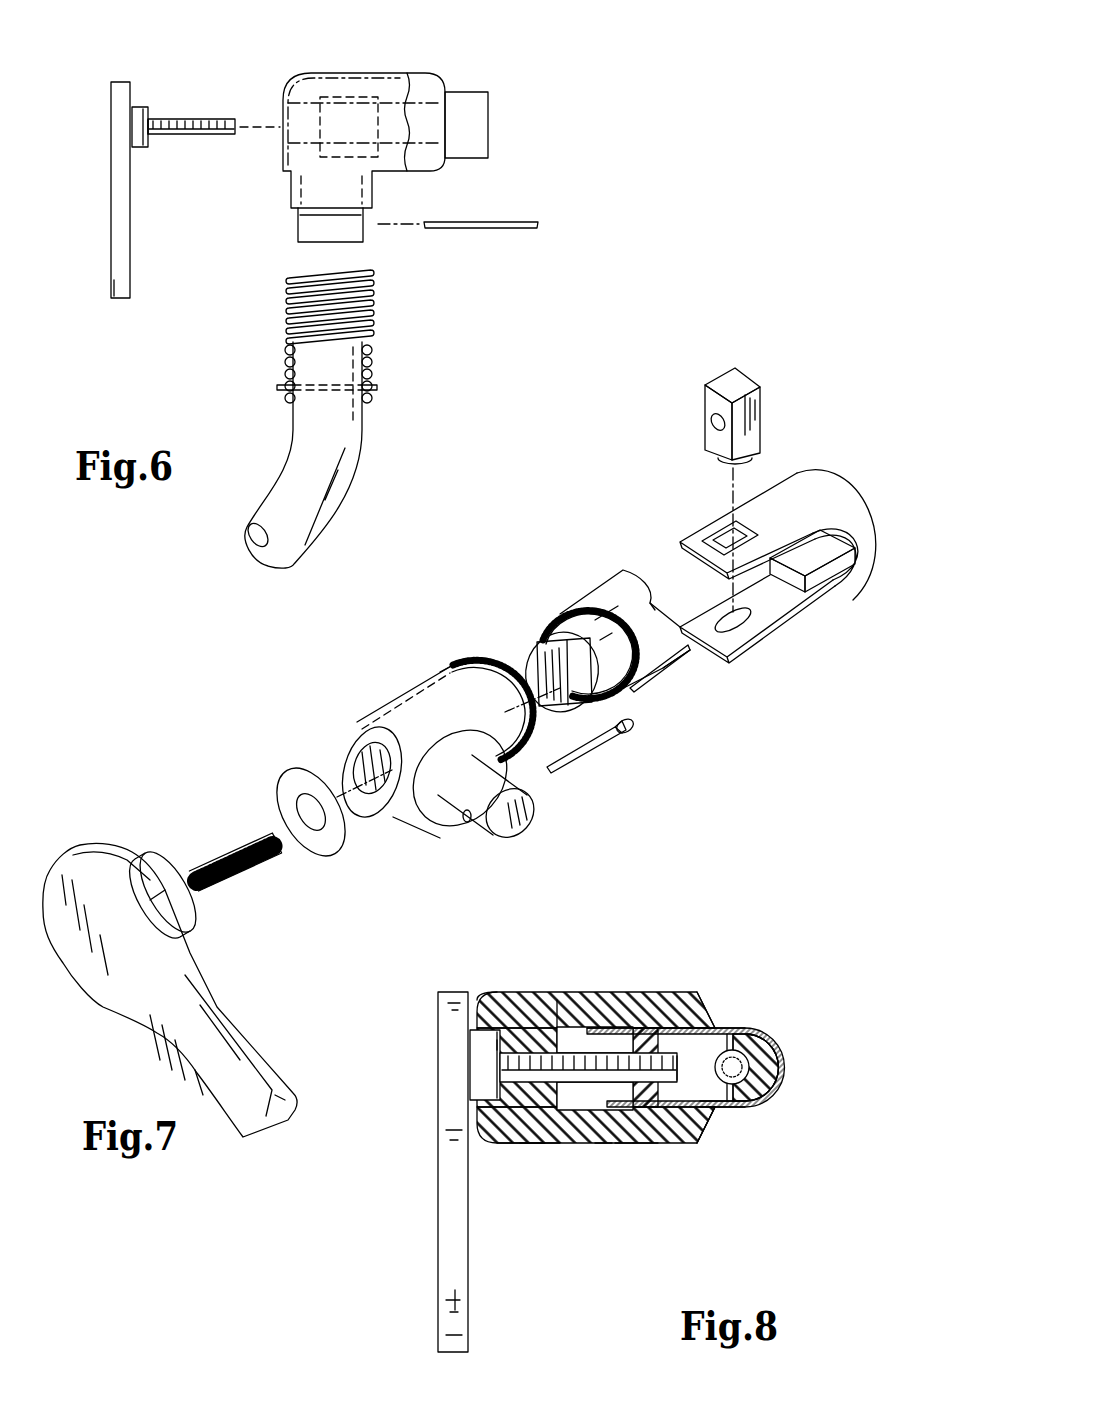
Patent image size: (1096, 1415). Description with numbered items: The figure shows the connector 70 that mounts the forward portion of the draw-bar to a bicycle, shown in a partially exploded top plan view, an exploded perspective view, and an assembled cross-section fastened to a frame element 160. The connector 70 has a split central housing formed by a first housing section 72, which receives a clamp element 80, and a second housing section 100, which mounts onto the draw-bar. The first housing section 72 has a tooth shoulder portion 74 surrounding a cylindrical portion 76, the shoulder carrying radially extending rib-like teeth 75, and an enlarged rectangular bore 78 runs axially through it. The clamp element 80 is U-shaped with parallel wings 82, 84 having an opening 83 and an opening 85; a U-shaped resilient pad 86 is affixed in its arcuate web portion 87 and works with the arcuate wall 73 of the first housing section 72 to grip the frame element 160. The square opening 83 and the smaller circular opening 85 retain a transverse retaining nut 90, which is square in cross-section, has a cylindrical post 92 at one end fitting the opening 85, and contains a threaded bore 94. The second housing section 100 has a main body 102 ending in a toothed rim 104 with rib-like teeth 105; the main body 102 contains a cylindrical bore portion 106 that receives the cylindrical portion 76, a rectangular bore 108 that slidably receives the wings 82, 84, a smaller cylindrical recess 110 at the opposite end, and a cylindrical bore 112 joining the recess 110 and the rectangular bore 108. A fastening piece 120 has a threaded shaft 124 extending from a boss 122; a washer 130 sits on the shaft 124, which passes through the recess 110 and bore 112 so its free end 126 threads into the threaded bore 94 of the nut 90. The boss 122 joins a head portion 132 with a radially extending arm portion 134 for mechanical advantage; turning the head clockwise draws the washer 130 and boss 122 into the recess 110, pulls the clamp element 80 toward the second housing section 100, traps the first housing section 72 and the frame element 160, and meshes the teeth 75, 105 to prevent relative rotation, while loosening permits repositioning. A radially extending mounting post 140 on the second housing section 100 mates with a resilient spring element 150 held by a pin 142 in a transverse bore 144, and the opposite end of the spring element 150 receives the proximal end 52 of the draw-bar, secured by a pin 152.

In FIG. 6, the proximal end 52 is at (323, 483).
In FIG. 6, the connector 70 is at (442, 67).
In FIG. 7, the connector 70 is at (472, 527).
In FIG. 8, the connector 70 is at (776, 908).
In FIG. 6, the first housing section 72 is at (443, 93).
In FIG. 7, the first housing section 72 is at (604, 632).
In FIG. 8, the first housing section 72 is at (677, 990).
In FIG. 7, the arcuate wall 73 is at (690, 653).
In FIG. 8, the arcuate wall 73 is at (733, 1028).
In FIG. 7, the tooth shoulder portion 74 is at (630, 690).
In FIG. 7, the rib-like teeth 75 is at (650, 687).
In FIG. 8, the rib-like teeth 75 is at (625, 1143).
In FIG. 7, the cylindrical portion 76 is at (547, 627).
In FIG. 8, the cylindrical portion 76 is at (603, 1143).
In FIG. 7, the rectangular bore 78 is at (537, 654).
In FIG. 8, the rectangular bore 78 is at (697, 1137).
In FIG. 6, the clamp element 80 is at (477, 137).
In FIG. 7, the clamp element 80 is at (759, 523).
In FIG. 8, the clamp element 80 is at (721, 1063).
In FIG. 7, the wing 82 is at (743, 505).
In FIG. 8, the wing 82 is at (730, 1030).
In FIG. 7, the opening 83 is at (723, 537).
In FIG. 7, the wing 84 is at (740, 617).
In FIG. 8, the wing 84 is at (733, 1113).
In FIG. 7, the opening 85 is at (783, 600).
In FIG. 7, the resilient pad 86 is at (830, 550).
In FIG. 8, the resilient pad 86 is at (760, 1093).
In FIG. 7, the arcuate web portion 87 is at (840, 490).
In FIG. 8, the arcuate web portion 87 is at (783, 1068).
In FIG. 7, the transverse retaining nut 90 is at (715, 490).
In FIG. 8, the transverse retaining nut 90 is at (692, 1047).
In FIG. 7, the cylindrical post 92 is at (720, 463).
In FIG. 8, the cylindrical post 92 is at (637, 1143).
In FIG. 7, the threaded bore 94 is at (710, 422).
In FIG. 6, the second housing section 100 is at (305, 77).
In FIG. 7, the second housing section 100 is at (433, 741).
In FIG. 8, the second housing section 100 is at (571, 1082).
In FIG. 7, the main body 102 is at (427, 700).
In FIG. 8, the main body 102 is at (510, 1133).
In FIG. 7, the toothed rim 104 is at (470, 662).
In FIG. 8, the toothed rim 104 is at (613, 1143).
In FIG. 7, the rib-like teeth 105 is at (587, 733).
In FIG. 8, the rib-like teeth 105 is at (640, 1007).
In FIG. 8, the cylindrical bore portion 106 is at (630, 990).
In FIG. 8, the rectangular bore 108 is at (567, 990).
In FIG. 7, the cylindrical recess 110 is at (377, 812).
In FIG. 8, the cylindrical recess 110 is at (475, 992).
In FIG. 7, the cylindrical bore 112 is at (352, 764).
In FIG. 8, the cylindrical bore 112 is at (533, 1143).
In FIG. 6, the fastening piece 120 is at (140, 91).
In FIG. 7, the fastening piece 120 is at (157, 763).
In FIG. 8, the fastening piece 120 is at (415, 1212).
In FIG. 6, the boss 122 is at (135, 148).
In FIG. 7, the boss 122 is at (193, 917).
In FIG. 8, the boss 122 is at (480, 1080).
In FIG. 6, the threaded shaft 124 is at (190, 115).
In FIG. 7, the threaded shaft 124 is at (233, 880).
In FIG. 8, the threaded shaft 124 is at (553, 1143).
In FIG. 7, the free end 126 is at (272, 844).
In FIG. 8, the free end 126 is at (677, 1063).
In FIG. 6, the washer 130 is at (148, 140).
In FIG. 7, the washer 130 is at (330, 852).
In FIG. 8, the washer 130 is at (497, 1047).
In FIG. 6, the head portion 132 is at (120, 180).
In FIG. 7, the head portion 132 is at (77, 847).
In FIG. 8, the head portion 132 is at (437, 1067).
In FIG. 6, the arm portion 134 is at (127, 282).
In FIG. 7, the arm portion 134 is at (220, 1050).
In FIG. 8, the arm portion 134 is at (455, 1305).
In FIG. 6, the mounting post 140 is at (320, 233).
In FIG. 7, the mounting post 140 is at (515, 807).
In FIG. 6, the pin 142 is at (497, 230).
In FIG. 7, the pin 142 is at (632, 728).
In FIG. 7, the bore 144 is at (470, 838).
In FIG. 6, the resilient spring element 150 is at (370, 298).
In FIG. 6, the pin 152 is at (380, 385).
In FIG. 8, the frame element 160 is at (757, 1085).